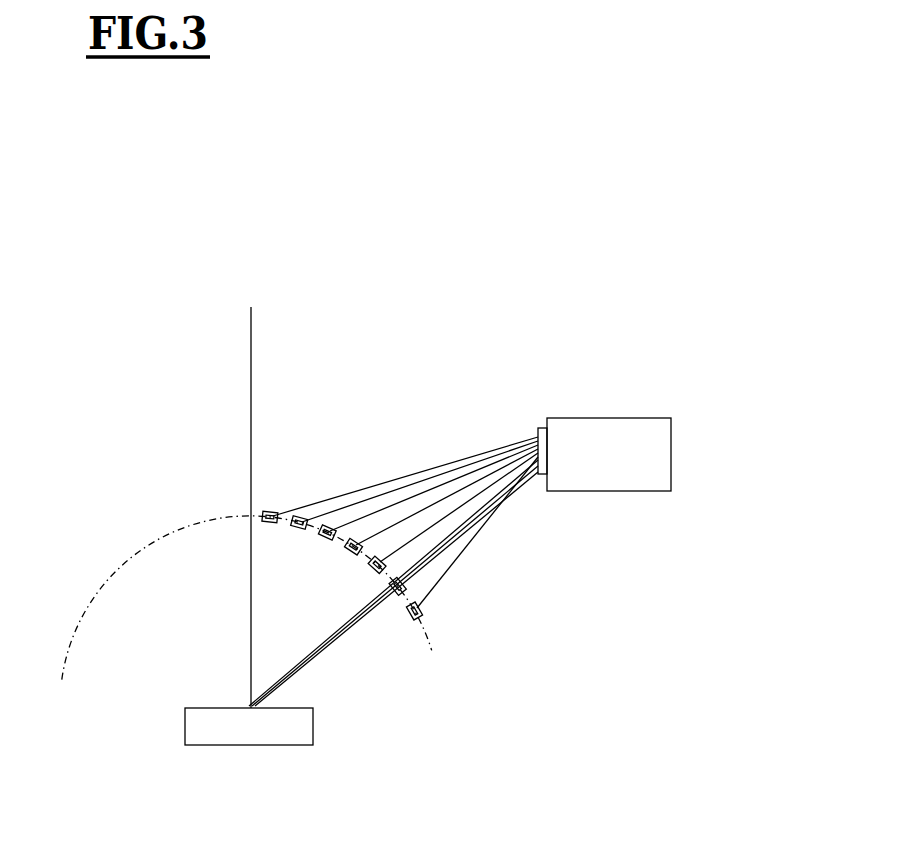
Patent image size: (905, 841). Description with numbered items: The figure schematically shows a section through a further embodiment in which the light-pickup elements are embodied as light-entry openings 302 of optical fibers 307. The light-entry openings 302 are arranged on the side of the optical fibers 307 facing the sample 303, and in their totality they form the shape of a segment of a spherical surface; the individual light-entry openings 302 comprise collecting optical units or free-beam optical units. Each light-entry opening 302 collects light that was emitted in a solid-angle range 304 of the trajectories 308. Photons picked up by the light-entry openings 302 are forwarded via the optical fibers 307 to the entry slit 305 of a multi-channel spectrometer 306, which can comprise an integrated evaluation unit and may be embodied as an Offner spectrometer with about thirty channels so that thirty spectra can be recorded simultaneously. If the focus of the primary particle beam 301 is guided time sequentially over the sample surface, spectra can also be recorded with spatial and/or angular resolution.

The primary particle beam 301 is at (253, 361).
The light-entry openings 302 is at (417, 608).
The sample 303 is at (313, 727).
The solid-angle range 304 is at (365, 625).
The entry slit 305 is at (538, 428).
The multi-channel spectrometer 306 is at (640, 425).
The optical fibers 307 is at (480, 533).
The trajectories 308 is at (310, 670).